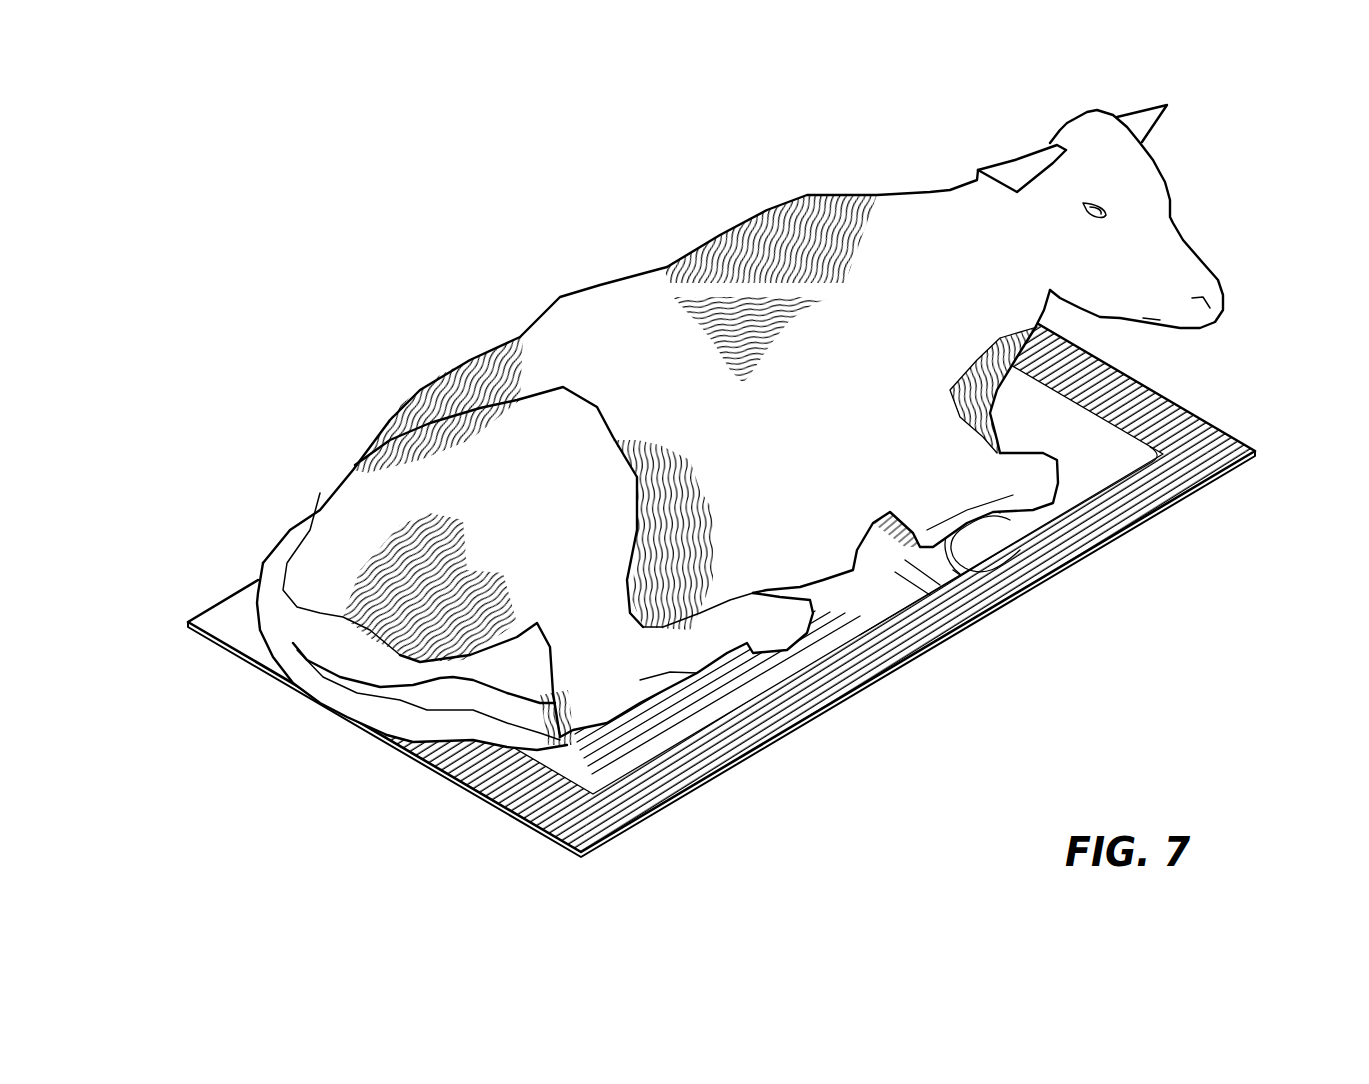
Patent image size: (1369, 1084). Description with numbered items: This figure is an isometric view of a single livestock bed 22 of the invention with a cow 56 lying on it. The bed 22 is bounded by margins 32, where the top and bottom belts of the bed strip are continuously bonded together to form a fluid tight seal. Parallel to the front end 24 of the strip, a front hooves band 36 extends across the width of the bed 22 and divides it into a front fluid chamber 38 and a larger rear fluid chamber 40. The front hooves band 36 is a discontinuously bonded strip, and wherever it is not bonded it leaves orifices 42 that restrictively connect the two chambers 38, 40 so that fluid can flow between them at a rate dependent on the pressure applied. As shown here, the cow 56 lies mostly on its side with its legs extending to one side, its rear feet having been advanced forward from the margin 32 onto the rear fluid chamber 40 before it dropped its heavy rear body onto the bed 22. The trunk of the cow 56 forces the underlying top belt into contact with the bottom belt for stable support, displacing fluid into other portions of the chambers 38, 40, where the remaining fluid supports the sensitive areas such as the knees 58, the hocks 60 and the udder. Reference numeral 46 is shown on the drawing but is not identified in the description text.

The bed 22 is at (718, 550).
The front end 24 is at (766, 550).
The margins 32 is at (1069, 380).
The front hooves band 36 is at (925, 567).
The front fluid chamber 38 is at (1050, 423).
The rear fluid chamber 40 is at (623, 740).
The orifices 42 is at (953, 570).
The lower mat layer 46 is at (430, 740).
The cow 56 is at (782, 481).
The knees 58 is at (1045, 482).
The hocks 60 is at (697, 677).